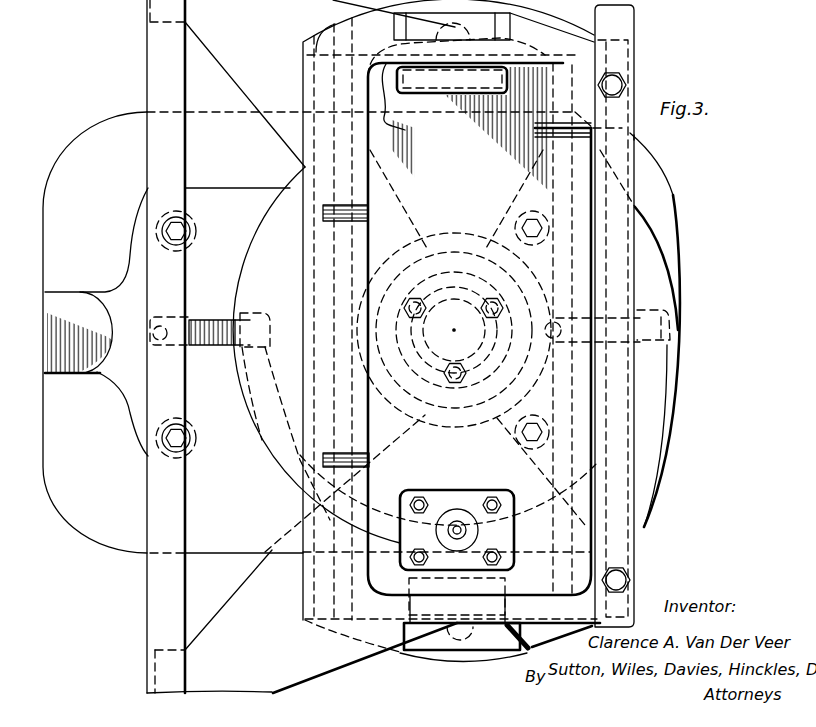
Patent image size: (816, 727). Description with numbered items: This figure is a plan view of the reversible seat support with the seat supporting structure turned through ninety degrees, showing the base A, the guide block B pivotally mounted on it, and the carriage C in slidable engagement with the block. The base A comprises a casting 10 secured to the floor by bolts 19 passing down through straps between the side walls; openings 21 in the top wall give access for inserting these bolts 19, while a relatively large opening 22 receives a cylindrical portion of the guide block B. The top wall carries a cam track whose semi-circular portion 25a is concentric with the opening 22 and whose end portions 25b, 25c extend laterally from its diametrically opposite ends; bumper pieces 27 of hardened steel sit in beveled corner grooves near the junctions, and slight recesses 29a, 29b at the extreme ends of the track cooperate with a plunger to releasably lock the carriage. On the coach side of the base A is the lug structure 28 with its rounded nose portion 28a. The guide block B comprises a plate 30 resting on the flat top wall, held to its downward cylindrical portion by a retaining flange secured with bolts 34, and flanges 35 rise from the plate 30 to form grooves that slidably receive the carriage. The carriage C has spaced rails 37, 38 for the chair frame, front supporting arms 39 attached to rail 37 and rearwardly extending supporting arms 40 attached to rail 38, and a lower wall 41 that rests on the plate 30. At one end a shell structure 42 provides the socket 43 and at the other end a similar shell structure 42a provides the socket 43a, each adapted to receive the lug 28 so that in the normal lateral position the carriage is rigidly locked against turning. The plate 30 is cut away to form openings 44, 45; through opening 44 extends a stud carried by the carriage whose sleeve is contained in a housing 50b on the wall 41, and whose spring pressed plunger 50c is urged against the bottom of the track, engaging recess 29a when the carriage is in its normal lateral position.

The casting 10 is at (90, 143).
The bolts 19 is at (187, 234).
The openings 21 is at (185, 231).
The opening 22 is at (454, 338).
The semi-circular portion 25a is at (292, 478).
The end portion 25b is at (201, 320).
The end portion 25c is at (611, 317).
The bumper pieces 27 is at (243, 313).
The lug structure 28 is at (57, 303).
The nose portion 28a is at (82, 300).
The recess 29a is at (163, 325).
The recess 29b is at (496, 371).
The plate 30 is at (415, 355).
The bolts 34 is at (486, 292).
The flanges 35 is at (312, 230).
The rail 37 is at (157, 62).
The rail 38 is at (617, 160).
The front supporting arms 39 is at (389, 338).
The rearwardly extending supporting arms 40 is at (581, 50).
The lower wall 41 is at (507, 324).
The shell structure 42 is at (508, 572).
The shell structure 42a is at (467, 92).
The socket 43 is at (505, 590).
The socket 43a is at (493, 90).
The opening 44 is at (448, 495).
The opening 45 is at (465, 127).
The housing 50b is at (462, 523).
The spring pressed plunger 50c is at (452, 523).
The base A is at (654, 200).
The guide block B is at (467, 660).
The carriage C is at (365, 658).